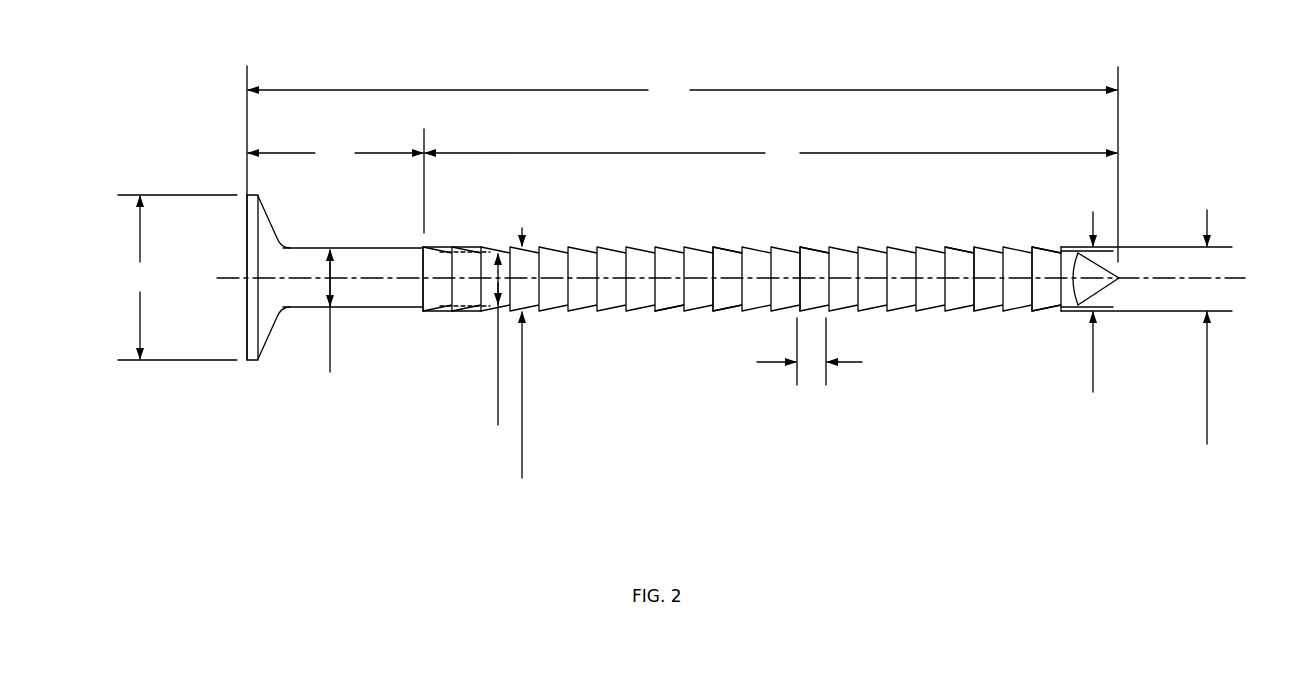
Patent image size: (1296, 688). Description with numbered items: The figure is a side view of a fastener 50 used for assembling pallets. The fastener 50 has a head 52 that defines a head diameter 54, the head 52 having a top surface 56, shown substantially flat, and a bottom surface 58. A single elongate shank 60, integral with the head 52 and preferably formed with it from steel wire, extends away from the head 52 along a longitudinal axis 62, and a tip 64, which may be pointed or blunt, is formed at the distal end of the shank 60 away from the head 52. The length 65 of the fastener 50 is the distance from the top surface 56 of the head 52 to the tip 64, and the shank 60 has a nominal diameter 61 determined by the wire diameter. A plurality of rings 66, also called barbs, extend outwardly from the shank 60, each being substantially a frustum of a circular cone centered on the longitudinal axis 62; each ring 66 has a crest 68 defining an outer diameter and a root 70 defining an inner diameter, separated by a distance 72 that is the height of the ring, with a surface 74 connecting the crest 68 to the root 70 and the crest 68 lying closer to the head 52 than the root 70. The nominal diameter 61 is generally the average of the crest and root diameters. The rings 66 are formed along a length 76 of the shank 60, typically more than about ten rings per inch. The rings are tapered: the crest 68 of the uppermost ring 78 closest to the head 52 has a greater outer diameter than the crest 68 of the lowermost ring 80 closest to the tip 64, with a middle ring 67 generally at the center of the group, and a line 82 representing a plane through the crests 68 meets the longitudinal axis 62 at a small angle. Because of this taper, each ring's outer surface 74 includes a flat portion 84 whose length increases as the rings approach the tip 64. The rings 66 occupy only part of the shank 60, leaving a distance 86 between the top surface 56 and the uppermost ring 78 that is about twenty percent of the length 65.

The fastener 50 is at (190, 108).
The head 52 is at (247, 337).
The head diameter 54 is at (177, 277).
The top surface 56 is at (246, 233).
The bottom surface 58 is at (260, 323).
The shank 60 is at (419, 323).
The nominal diameter 61 is at (330, 372).
The longitudinal axis 62 is at (364, 277).
The tip 64 is at (1115, 265).
The length 65 is at (682, 164).
The rings 66 is at (684, 247).
The middle ring 67 is at (739, 245).
The crest 68 is at (498, 425).
The root 70 is at (522, 478).
The distance 72 is at (809, 351).
The surface 74 is at (822, 247).
The length 76 is at (771, 154).
The uppermost ring 78 is at (429, 238).
The lowermost ring 80 is at (1045, 243).
The line 82 is at (665, 312).
The flat portion 84 is at (978, 247).
The distance 86 is at (336, 181).